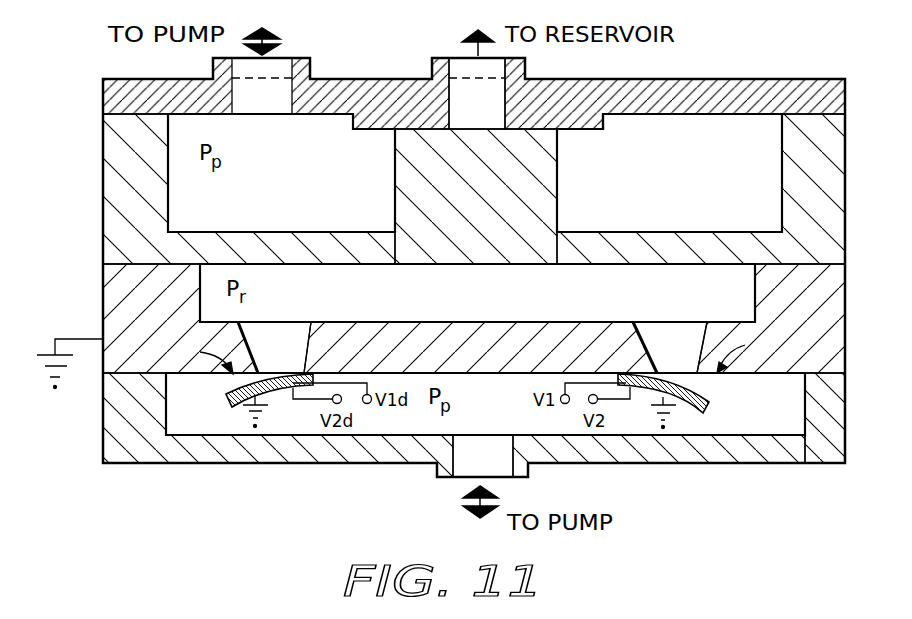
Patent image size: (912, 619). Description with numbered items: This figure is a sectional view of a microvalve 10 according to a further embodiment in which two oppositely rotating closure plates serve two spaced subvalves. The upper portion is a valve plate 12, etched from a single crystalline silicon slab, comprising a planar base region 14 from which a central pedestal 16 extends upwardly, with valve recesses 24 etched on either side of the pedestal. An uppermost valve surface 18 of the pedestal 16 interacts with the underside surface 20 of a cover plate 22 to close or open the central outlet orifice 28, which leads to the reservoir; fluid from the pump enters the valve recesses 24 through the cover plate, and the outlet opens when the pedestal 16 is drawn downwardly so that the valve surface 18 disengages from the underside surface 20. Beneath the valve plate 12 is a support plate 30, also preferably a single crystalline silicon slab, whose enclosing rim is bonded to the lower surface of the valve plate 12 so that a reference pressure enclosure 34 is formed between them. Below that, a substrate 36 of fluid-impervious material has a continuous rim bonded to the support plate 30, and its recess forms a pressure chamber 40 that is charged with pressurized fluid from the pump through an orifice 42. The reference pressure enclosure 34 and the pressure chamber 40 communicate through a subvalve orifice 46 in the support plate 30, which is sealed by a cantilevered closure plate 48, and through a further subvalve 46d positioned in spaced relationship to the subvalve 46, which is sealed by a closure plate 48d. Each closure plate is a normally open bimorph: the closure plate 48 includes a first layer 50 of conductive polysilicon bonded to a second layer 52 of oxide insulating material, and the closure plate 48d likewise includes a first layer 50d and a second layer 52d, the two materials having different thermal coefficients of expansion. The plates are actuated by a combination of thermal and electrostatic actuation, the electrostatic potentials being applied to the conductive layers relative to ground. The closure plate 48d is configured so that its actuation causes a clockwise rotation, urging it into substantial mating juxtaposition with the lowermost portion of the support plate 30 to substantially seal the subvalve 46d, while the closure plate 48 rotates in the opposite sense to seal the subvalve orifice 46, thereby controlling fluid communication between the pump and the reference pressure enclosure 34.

The microvalve 10 is at (804, 50).
The valve plate 12 is at (90, 115).
The planar base region 14 is at (203, 232).
The central pedestal 16 is at (543, 187).
The uppermost valve surface 18 is at (540, 120).
The underside surface 20 is at (603, 133).
The cover plate 22 is at (710, 102).
The valve recesses 24 is at (327, 184).
The outlet orifice 28 is at (463, 62).
The support plate 30 is at (857, 265).
The reference pressure enclosure 34 is at (507, 316).
The substrate 36 is at (90, 375).
The pressure chamber 40 is at (512, 412).
The orifice 42 is at (472, 463).
The orifice 46 is at (677, 335).
The subvalve 46d is at (290, 337).
The closure plate 48 is at (749, 356).
The closure plate 48d is at (194, 355).
The first layer 50 is at (706, 413).
The first layer 50d is at (228, 404).
The second layer 52 is at (710, 394).
The second layer 52d is at (227, 394).